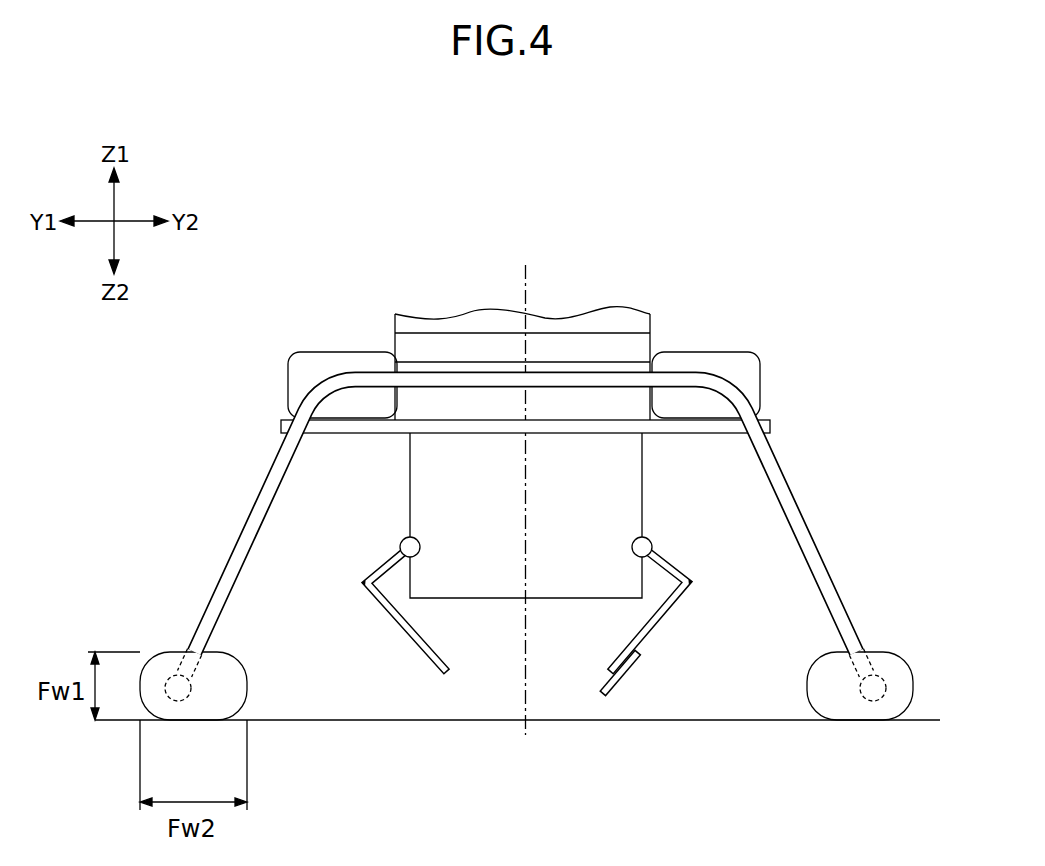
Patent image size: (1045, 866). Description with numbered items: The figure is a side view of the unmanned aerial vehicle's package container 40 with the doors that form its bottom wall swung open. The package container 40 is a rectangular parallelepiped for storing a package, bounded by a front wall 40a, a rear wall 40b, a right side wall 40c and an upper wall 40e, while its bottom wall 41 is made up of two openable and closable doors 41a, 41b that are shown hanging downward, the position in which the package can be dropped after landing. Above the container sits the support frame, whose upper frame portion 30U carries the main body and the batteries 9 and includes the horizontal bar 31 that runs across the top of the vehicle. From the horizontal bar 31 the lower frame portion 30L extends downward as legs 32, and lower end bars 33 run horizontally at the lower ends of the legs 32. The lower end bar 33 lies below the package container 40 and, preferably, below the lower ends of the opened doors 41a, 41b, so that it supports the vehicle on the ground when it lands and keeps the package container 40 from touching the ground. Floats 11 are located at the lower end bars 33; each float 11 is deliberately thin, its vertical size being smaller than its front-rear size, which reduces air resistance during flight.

The battery 9 is at (322, 363).
The float 11 is at (172, 663).
The upper frame portion 30U is at (340, 436).
The lower frame portion 30L is at (841, 596).
The horizontal bar 31 is at (443, 378).
The leg 32 is at (222, 578).
The lower end bar 33 is at (180, 701).
The package container 40 is at (529, 567).
The front wall 40a is at (410, 520).
The rear wall 40b is at (642, 495).
The right side wall 40c is at (618, 510).
The upper wall 40e is at (475, 434).
The bottom wall 41 is at (527, 679).
The door 41a is at (448, 673).
The door 41b is at (626, 656).